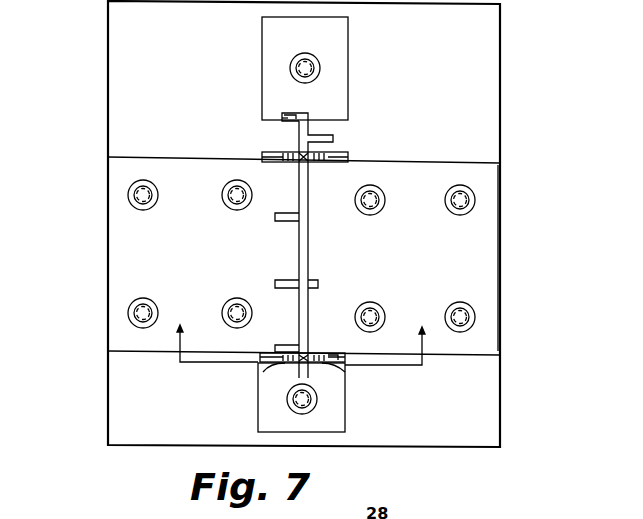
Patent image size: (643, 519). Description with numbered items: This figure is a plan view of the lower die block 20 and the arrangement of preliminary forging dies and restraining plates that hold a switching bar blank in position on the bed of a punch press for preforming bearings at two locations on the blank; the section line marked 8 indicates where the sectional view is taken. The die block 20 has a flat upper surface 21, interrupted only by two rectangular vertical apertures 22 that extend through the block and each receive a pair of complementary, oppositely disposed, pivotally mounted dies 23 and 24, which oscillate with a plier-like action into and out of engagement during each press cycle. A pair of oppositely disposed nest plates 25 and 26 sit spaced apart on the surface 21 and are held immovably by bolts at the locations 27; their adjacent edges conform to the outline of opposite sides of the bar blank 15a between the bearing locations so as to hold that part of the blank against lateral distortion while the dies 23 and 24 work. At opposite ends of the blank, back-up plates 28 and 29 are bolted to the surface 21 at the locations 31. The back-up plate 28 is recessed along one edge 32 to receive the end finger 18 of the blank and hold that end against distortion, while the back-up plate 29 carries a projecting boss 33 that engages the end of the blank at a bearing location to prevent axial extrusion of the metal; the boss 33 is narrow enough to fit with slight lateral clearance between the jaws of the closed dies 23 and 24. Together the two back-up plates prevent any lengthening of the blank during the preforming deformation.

The die block 20 is at (500, 55).
The flat upper surface 21 is at (470, 95).
The nest plate 25 is at (112, 265).
The nest plate 26 is at (490, 262).
The bolt locations 27 is at (447, 208).
The back-up plate 28 is at (305, 68).
The back-up plate 29 is at (338, 418).
The bolt locations 31 is at (276, 41).
The recessed edge 32 is at (290, 116).
The projecting boss 33 is at (315, 365).
The bar 15a is at (305, 183).
The end finger 18 is at (285, 118).
The vertical aperture 22 is at (348, 155).
The die 23 is at (285, 162).
The die 24 is at (340, 150).
The section line 8 is at (300, 331).